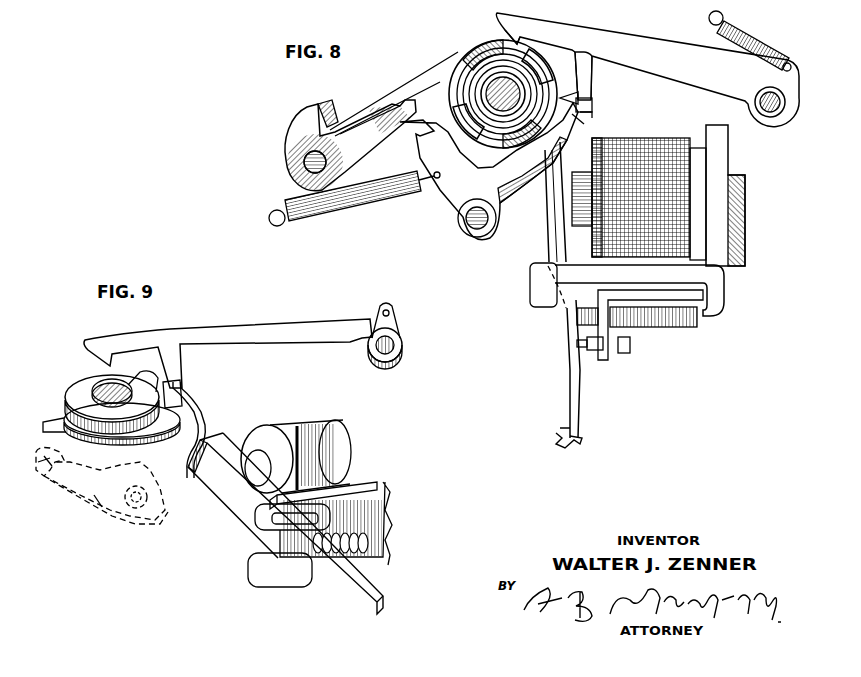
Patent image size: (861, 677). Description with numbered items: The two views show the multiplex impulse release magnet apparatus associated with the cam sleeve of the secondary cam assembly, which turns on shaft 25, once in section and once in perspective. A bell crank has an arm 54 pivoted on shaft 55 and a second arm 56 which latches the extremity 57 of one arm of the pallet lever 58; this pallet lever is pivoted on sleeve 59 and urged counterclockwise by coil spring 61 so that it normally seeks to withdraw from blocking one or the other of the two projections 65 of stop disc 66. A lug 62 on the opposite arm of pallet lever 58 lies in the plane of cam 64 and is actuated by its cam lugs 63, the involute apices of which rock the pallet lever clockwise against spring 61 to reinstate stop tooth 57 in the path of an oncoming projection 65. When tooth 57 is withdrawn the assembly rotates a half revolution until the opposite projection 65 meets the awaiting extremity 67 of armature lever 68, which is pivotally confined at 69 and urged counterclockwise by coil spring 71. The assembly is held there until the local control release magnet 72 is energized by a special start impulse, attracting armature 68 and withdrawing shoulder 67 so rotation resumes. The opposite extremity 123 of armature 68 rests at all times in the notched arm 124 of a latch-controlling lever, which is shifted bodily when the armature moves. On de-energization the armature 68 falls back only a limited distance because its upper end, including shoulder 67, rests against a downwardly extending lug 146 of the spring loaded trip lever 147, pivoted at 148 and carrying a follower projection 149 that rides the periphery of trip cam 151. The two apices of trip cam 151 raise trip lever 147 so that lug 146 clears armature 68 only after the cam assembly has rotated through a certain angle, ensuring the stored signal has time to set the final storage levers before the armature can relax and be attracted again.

In FIG. 8, the shaft 25 is at (478, 138).
In FIG. 8, the arm 54 is at (332, 104).
In FIG. 8, the shaft 55 is at (302, 163).
In FIG. 8, the arm 56 is at (365, 140).
In FIG. 9, the extremity 57 is at (44, 470).
In FIG. 9, the pallet lever 58 is at (98, 502).
In FIG. 8, the sleeve 59 is at (466, 232).
In FIG. 9, the sleeve 59 is at (148, 506).
In FIG. 8, the coil spring 61 is at (405, 192).
In FIG. 8, the lug 62 is at (565, 90).
In FIG. 8, the cam lugs 63 is at (456, 128).
In FIG. 9, the cam lugs 63 is at (140, 382).
In FIG. 9, the cam 64 is at (90, 388).
In FIG. 8, the projections 65 is at (428, 98).
In FIG. 9, the projections 65 is at (60, 422).
In FIG. 8, the stop disc 66 is at (500, 146).
In FIG. 8, the extremity 67 is at (592, 108).
In FIG. 9, the extremity 67 is at (188, 396).
In FIG. 8, the armature lever 68 is at (552, 222).
In FIG. 9, the pivot 69 is at (275, 515).
In FIG. 8, the coil spring 71 is at (674, 315).
In FIG. 9, the coil spring 71 is at (375, 540).
In FIG. 8, the release magnet 72 is at (668, 150).
In FIG. 9, the release magnet 72 is at (303, 425).
In FIG. 8, the opposite extremity 123 is at (580, 422).
In FIG. 9, the opposite extremity 123 is at (387, 596).
In FIG. 8, the notched arm 124 is at (582, 450).
In FIG. 8, the lug 146 is at (578, 76).
In FIG. 8, the trip lever 147 is at (643, 46).
In FIG. 9, the trip lever 147 is at (248, 336).
In FIG. 8, the pivot 148 is at (770, 118).
In FIG. 9, the pivot 148 is at (400, 340).
In FIG. 8, the follower projection 149 is at (494, 38).
In FIG. 8, the trip cam 151 is at (582, 120).